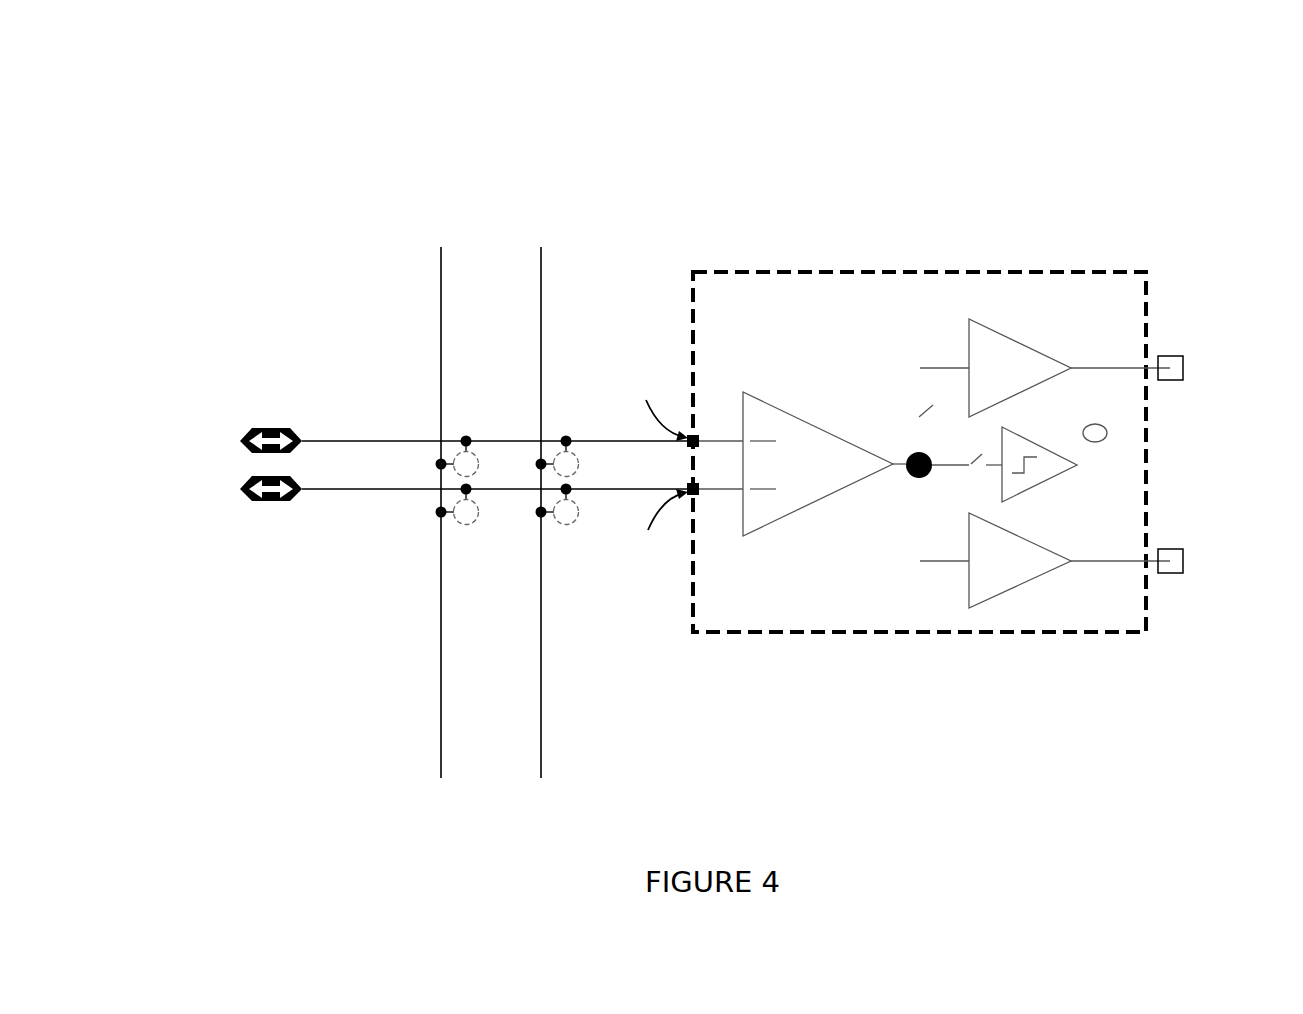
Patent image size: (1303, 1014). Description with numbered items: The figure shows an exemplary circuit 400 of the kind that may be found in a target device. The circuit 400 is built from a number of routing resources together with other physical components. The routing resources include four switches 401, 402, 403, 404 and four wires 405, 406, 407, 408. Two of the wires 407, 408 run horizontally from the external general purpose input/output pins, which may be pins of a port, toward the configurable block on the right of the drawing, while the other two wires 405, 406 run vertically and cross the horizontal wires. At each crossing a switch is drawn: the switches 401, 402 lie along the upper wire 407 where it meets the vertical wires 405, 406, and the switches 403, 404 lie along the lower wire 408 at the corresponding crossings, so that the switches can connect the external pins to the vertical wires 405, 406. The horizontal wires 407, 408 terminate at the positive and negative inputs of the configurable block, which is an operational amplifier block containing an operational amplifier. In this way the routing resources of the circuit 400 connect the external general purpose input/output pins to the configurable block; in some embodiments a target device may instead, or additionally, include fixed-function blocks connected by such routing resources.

The circuit 400 is at (1200, 150).
The switch 401 is at (475, 456).
The switch 402 is at (575, 456).
The switch 403 is at (475, 504).
The switch 404 is at (575, 504).
The wire 405 is at (459, 512).
The wire 406 is at (560, 512).
The wire 407 is at (497, 429).
The wire 408 is at (497, 478).